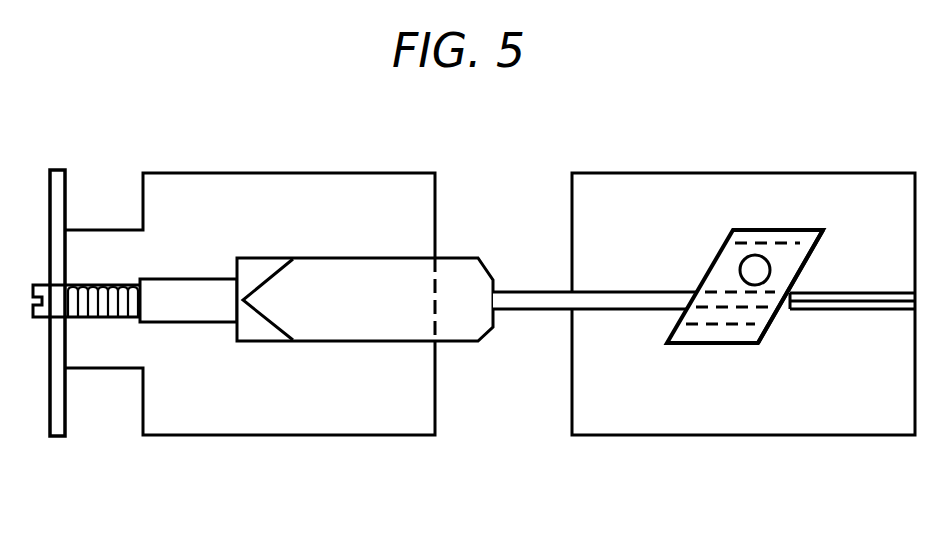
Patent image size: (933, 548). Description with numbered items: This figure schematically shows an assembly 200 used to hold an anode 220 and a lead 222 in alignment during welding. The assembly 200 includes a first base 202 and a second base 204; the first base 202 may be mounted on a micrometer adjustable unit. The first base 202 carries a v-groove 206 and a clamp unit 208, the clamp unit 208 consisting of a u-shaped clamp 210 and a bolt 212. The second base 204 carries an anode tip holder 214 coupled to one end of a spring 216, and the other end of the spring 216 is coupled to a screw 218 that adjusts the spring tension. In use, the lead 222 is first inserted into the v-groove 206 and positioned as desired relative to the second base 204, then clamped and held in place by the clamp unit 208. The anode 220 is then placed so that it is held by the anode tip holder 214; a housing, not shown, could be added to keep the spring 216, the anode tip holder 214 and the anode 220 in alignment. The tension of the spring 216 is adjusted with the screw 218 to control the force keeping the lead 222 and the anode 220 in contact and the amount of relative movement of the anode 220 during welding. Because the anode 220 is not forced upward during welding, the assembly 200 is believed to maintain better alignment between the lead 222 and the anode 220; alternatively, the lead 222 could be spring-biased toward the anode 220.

The assembly 200 is at (760, 102).
The first base 202 is at (725, 437).
The second base 204 is at (264, 437).
The v-groove 206 is at (827, 310).
The clamp unit 208 is at (750, 230).
The u-shaped clamp 210 is at (806, 258).
The bolt 212 is at (741, 266).
The anode tip holder 214 is at (268, 258).
The spring 216 is at (163, 322).
The screw 218 is at (80, 318).
The anode 220 is at (353, 341).
The lead 222 is at (528, 310).